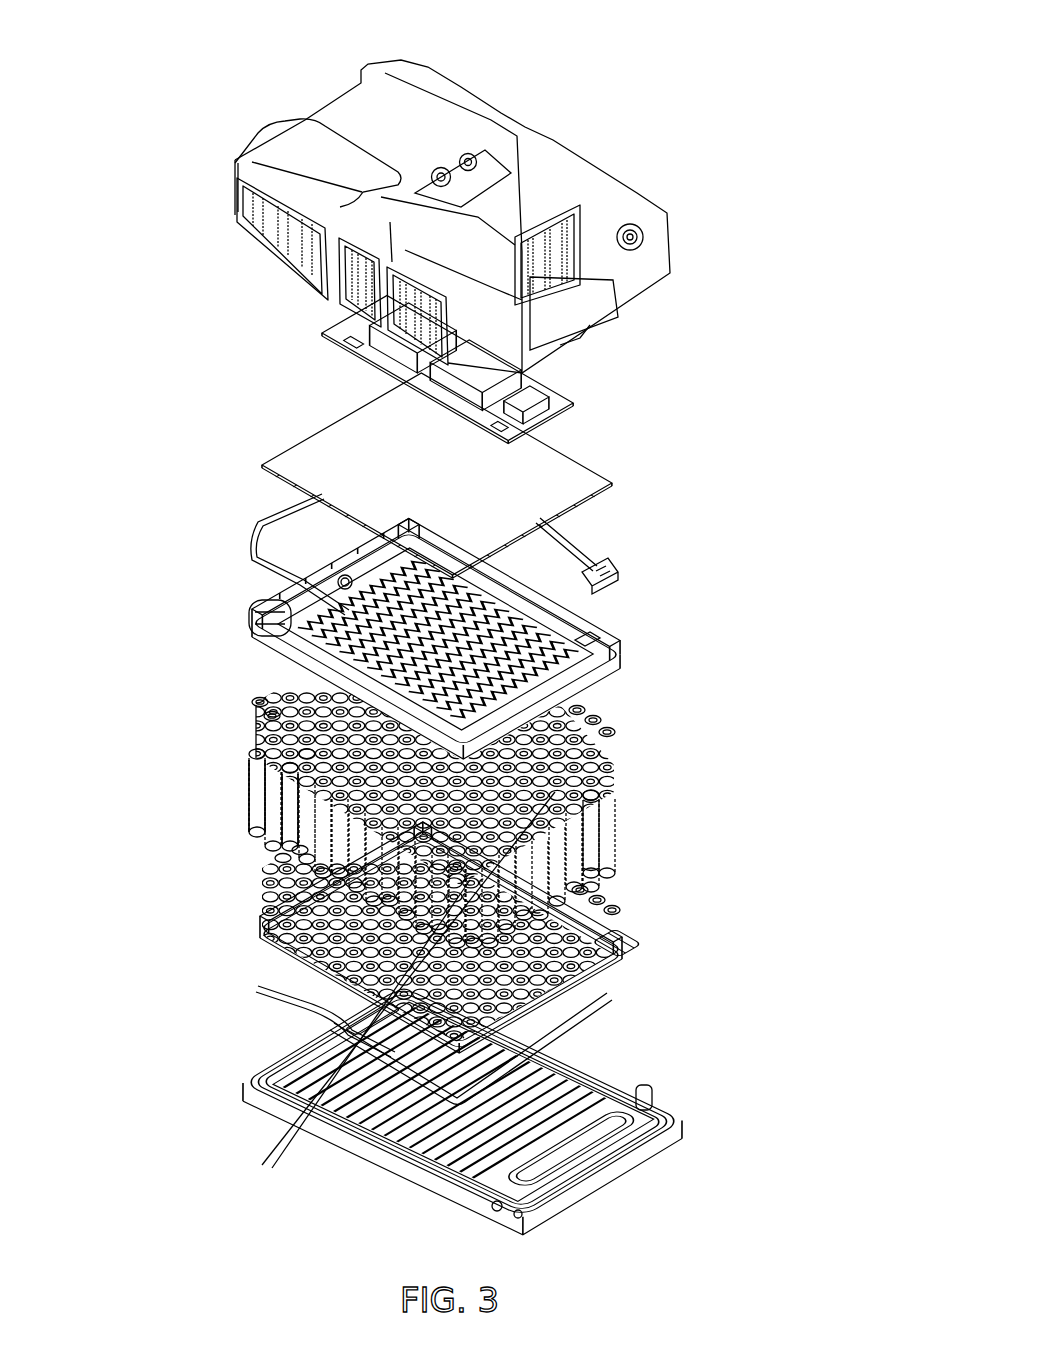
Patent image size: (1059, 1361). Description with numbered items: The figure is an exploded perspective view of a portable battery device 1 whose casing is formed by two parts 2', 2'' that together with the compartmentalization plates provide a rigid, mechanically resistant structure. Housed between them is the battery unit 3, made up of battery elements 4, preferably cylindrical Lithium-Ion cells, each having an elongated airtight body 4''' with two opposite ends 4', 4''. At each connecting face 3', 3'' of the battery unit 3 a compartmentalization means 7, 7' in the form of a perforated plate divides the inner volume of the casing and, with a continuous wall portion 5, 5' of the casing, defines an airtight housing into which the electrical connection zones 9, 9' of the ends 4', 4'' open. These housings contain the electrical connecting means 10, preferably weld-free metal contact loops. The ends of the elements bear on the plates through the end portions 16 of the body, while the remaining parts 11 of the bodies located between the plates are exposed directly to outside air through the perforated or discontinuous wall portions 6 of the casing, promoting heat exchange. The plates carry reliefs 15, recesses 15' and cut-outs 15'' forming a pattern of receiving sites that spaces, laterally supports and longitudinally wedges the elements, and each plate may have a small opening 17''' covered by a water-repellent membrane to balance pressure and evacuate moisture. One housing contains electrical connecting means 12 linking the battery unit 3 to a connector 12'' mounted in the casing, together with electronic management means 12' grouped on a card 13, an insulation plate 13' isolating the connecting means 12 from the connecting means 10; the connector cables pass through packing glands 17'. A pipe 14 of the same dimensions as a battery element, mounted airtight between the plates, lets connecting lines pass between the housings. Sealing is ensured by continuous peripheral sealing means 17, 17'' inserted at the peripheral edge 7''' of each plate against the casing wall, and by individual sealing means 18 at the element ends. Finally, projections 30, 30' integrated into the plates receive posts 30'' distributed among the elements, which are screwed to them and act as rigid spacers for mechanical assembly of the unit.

The portable battery device 1 is at (600, 98).
The casing part 2' is at (452, 200).
The casing part 2'' is at (482, 1111).
The battery unit 3 is at (539, 809).
The connecting face 3' is at (685, 757).
The connecting face 3'' is at (687, 885).
The battery elements 4 is at (190, 801).
The end of battery element 4' is at (212, 761).
The end of battery element 4'' is at (215, 811).
The body of battery element 4''' is at (206, 796).
The continuous wall portion 5 is at (463, 121).
The continuous wall portion 5' is at (463, 1109).
The perforated or discontinuous wall portions 6 is at (417, 325).
The compartmentalization means 7 is at (517, 646).
The compartmentalization means 7' is at (524, 943).
The peripheral edge 7''' is at (393, 781).
The electrical connection zone 9 is at (255, 716).
The electrical connection zone 9' is at (250, 866).
The electrical connecting means 10 is at (310, 637).
The remaining part of body 11 is at (628, 790).
The electrical connecting means 12 is at (520, 381).
The electronic management and control means 12' is at (358, 357).
The connector 12'' is at (693, 211).
The card 13 is at (617, 363).
The insulation plate 13' is at (501, 476).
The pipe 14 is at (262, 752).
The reliefs 15 is at (186, 685).
The recesses 15' is at (376, 987).
The cut-outs 15'' is at (363, 944).
The end portions 16 is at (633, 790).
The peripheral sealing means 17 is at (233, 526).
The packing glands 17' is at (629, 579).
The peripheral sealing means 17'' is at (269, 1021).
The small opening 17''' is at (330, 558).
The individual sealing means 18 is at (590, 715).
The projection 30 is at (626, 625).
The projection 30' is at (500, 1047).
The posts 30'' is at (394, 990).